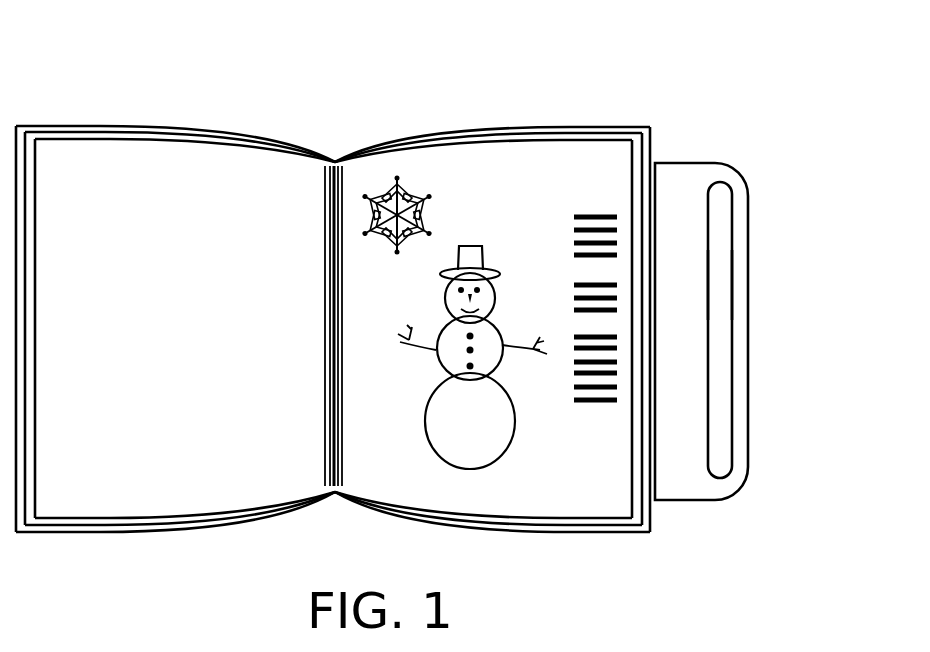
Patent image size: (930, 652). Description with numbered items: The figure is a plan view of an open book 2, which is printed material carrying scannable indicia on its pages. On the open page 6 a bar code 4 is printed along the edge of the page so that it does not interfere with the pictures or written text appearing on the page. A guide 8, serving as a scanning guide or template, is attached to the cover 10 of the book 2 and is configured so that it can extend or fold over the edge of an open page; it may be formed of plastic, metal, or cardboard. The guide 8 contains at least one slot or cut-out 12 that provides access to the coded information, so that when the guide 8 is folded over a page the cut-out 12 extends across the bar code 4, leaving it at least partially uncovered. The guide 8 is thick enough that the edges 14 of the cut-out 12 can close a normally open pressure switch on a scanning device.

The book 2 is at (118, 72).
The bar code 4 is at (601, 214).
The page 6 is at (524, 205).
The guide 8 is at (694, 333).
The cover 10 is at (623, 535).
The cut-out 12 is at (732, 367).
The edges 14 is at (710, 283).